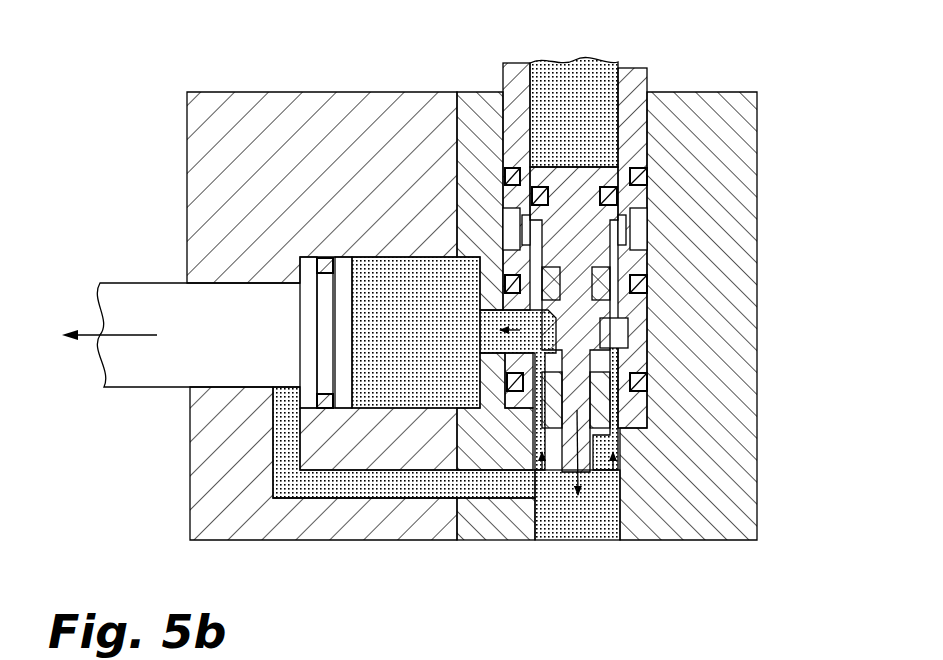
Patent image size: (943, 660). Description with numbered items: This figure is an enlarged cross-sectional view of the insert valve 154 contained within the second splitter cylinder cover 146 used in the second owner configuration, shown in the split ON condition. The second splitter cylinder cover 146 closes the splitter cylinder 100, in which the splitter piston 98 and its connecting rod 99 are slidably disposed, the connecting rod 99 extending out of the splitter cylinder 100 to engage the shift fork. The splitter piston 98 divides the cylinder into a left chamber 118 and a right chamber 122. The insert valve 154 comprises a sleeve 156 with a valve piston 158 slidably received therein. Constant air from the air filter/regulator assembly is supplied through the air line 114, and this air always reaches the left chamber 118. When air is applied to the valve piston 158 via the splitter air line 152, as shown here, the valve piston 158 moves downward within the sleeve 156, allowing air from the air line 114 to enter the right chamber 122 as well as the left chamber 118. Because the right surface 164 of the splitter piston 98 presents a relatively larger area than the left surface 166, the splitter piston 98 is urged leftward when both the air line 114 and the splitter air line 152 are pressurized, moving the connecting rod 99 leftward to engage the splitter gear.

The splitter piston 98 is at (343, 257).
The right surface 164 is at (356, 283).
The right chamber 122 is at (398, 273).
The splitter air line 152 is at (540, 103).
The splitter cylinder 100 is at (195, 160).
The insert valve 154 is at (636, 231).
The valve piston 158 is at (605, 330).
The sleeve 156 is at (620, 337).
The second splitter cylinder cover 146 is at (693, 515).
The air line 114 is at (543, 528).
The connecting rod 99 is at (123, 387).
The left surface 166 is at (290, 400).
The left chamber 118 is at (195, 513).